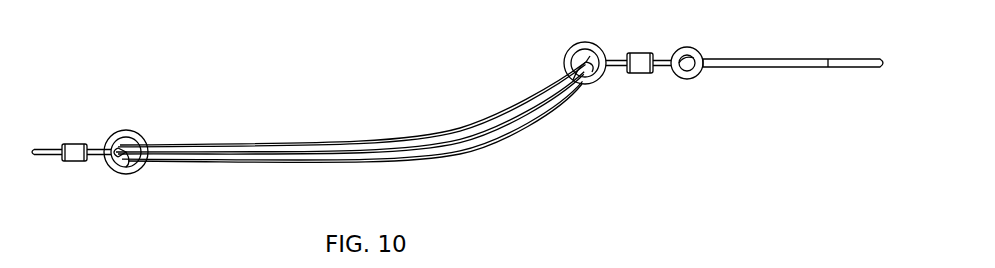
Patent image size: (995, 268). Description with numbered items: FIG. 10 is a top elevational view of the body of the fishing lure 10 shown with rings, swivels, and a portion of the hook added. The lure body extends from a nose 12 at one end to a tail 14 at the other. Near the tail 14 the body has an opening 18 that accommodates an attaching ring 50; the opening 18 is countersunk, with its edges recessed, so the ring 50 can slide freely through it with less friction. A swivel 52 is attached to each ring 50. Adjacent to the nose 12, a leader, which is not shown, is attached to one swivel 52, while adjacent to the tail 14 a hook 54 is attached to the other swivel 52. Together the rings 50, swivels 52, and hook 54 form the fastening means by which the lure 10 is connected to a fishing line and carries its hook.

The elastic band 10 is at (378, 203).
The nose 12 is at (127, 175).
The tail 14 is at (565, 70).
The opening 18 is at (579, 82).
The ring 50 is at (140, 134).
The swivel 52 is at (76, 143).
The hook 54 is at (738, 58).